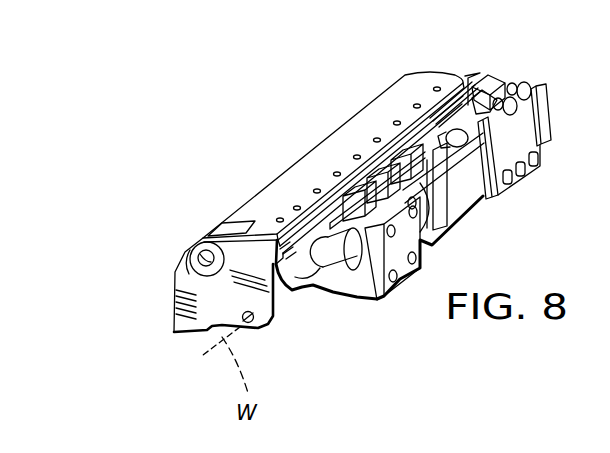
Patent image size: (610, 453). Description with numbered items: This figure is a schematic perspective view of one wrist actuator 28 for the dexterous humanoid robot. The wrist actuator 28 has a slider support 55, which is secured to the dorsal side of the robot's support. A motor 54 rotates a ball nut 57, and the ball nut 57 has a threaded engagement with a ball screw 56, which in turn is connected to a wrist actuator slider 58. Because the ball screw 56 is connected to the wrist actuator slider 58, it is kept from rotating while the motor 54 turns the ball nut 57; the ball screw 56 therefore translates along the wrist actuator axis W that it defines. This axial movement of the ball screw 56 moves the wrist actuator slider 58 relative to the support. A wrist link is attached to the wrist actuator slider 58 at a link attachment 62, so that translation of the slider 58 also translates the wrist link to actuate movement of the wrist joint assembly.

The wrist actuator 28 is at (283, 116).
The motor 54 is at (465, 122).
The slider support 55 is at (367, 277).
The ball screw 56 is at (292, 230).
The ball nut 57 is at (348, 252).
The wrist actuator slider 58 is at (377, 117).
The link attachment 62 is at (200, 263).